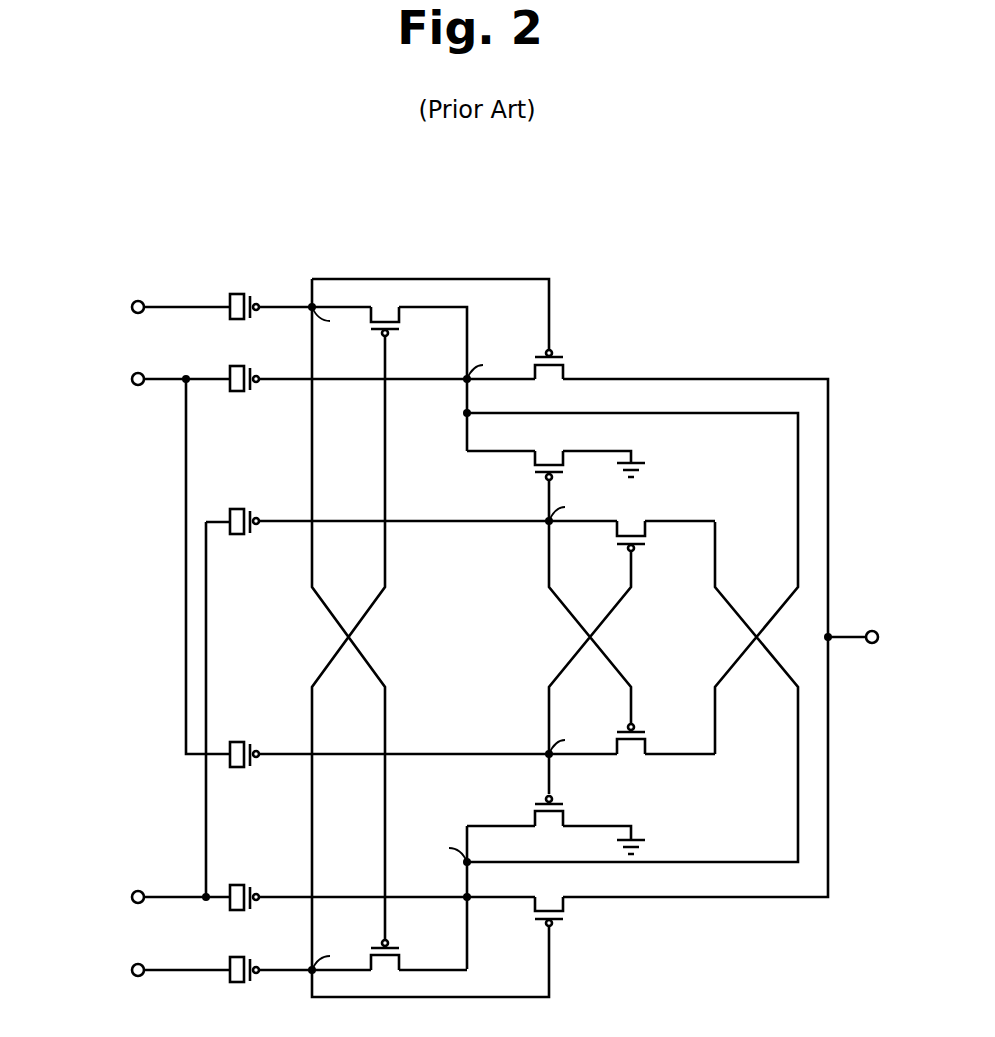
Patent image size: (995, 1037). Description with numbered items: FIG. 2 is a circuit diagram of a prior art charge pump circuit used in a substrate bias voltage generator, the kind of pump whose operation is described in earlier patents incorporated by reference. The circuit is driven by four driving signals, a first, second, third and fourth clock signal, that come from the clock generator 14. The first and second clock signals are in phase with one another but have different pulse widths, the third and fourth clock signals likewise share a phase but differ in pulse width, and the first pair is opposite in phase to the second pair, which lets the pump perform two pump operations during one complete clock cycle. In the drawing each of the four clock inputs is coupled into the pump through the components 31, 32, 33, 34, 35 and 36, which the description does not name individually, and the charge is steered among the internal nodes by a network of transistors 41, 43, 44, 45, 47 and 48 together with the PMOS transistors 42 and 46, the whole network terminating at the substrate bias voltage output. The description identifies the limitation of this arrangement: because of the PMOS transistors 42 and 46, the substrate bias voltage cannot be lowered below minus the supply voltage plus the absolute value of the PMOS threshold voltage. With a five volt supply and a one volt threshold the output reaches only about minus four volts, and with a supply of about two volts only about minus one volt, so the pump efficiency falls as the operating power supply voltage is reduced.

The clock generator 14 is at (704, 225).
The capacitor 31 is at (243, 292).
The capacitor 32 is at (243, 364).
The capacitor 33 is at (243, 741).
The capacitor 34 is at (245, 884).
The capacitor 35 is at (243, 508).
The capacitor 36 is at (243, 956).
The transistor 41 is at (385, 308).
The PMOS transistor 42 is at (548, 381).
The transistor 43 is at (548, 453).
The transistor 44 is at (631, 754).
The transistor 45 is at (385, 969).
The PMOS transistor 46 is at (549, 899).
The transistor 47 is at (549, 827).
The transistor 48 is at (631, 523).